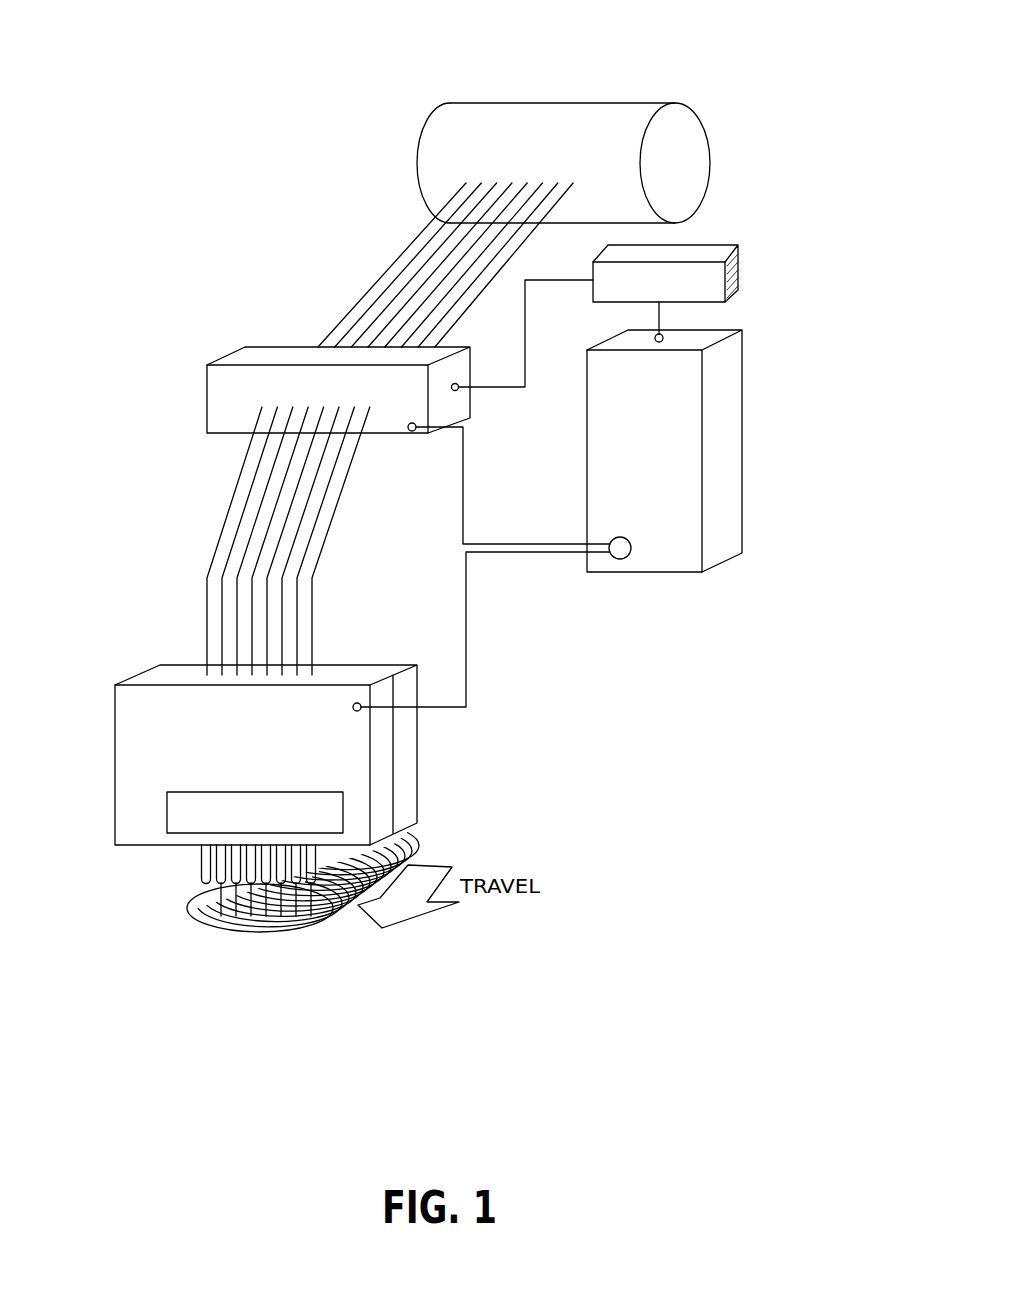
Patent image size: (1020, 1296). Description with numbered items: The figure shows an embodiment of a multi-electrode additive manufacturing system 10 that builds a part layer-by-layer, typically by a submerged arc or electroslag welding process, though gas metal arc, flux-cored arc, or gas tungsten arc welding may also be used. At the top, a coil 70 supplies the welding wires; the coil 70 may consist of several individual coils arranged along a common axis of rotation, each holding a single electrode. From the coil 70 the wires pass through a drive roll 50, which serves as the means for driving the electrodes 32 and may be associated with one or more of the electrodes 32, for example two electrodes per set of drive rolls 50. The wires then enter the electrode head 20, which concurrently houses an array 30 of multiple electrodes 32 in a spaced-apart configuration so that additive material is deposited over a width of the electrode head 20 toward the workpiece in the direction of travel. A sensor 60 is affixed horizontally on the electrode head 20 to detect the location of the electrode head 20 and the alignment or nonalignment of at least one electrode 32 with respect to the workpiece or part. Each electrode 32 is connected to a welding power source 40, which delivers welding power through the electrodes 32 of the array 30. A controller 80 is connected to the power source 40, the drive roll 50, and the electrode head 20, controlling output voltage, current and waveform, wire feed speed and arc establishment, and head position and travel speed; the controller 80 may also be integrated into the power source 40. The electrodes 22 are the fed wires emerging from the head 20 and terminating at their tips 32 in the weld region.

The additive manufacturing system 10 is at (748, 70).
The electrode head 20 is at (137, 700).
The welding electrodes (wires) 22 is at (195, 880).
The array 30 is at (190, 867).
The electrodes 32 is at (203, 920).
The welding power source 40 is at (708, 422).
The drive rolls 50 is at (213, 393).
The sensor 60 is at (272, 792).
The coil 70 is at (432, 165).
The controller 80 is at (718, 246).